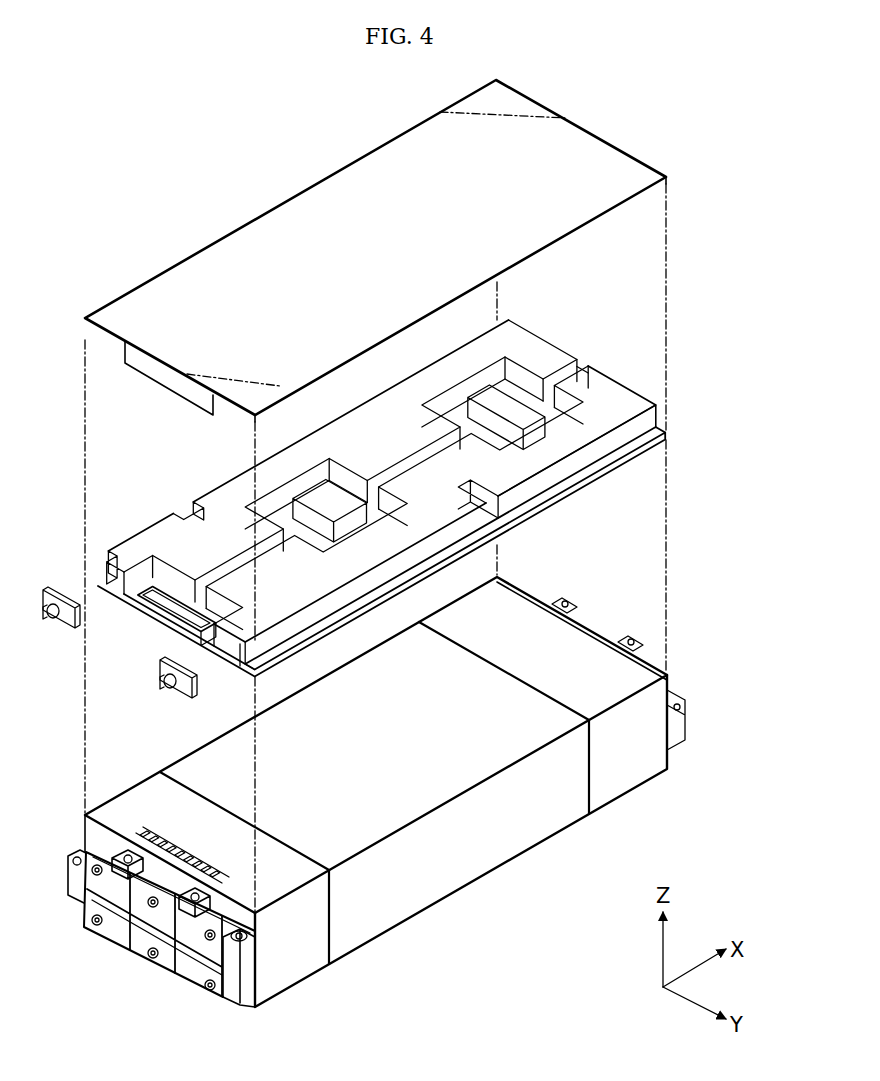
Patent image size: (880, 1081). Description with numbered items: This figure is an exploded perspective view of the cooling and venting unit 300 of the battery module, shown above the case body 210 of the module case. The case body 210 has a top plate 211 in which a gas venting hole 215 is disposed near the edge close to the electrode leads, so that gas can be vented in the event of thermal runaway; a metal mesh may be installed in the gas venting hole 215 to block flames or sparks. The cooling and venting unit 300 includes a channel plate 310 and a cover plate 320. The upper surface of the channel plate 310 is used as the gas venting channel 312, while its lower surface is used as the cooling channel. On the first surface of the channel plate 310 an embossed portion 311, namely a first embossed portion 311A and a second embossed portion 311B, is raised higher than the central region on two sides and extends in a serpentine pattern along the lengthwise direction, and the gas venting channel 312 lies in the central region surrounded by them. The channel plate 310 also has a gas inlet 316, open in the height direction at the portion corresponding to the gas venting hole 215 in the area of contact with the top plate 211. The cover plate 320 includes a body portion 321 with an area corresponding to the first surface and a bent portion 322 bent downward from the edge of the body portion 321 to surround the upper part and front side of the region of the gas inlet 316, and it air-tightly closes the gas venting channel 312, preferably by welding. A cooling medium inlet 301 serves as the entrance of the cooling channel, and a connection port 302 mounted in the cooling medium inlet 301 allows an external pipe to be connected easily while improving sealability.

The case body 210 is at (467, 899).
The top plate 211 is at (193, 778).
The gas venting hole 215 is at (150, 833).
The cooling and venting unit 300 is at (727, 140).
The cooling medium inlet 301 is at (95, 571).
The connection port 302 is at (63, 619).
The channel plate 310 is at (655, 394).
The embossed portion 311 is at (562, 415).
The first embossed portion 311A is at (508, 342).
The second embossed portion 311B is at (530, 462).
The gas venting channel 312 is at (281, 510).
The gas inlet 316 is at (170, 610).
The cover plate 320 is at (655, 160).
The body portion 321 is at (277, 223).
The bent portion 322 is at (170, 379).